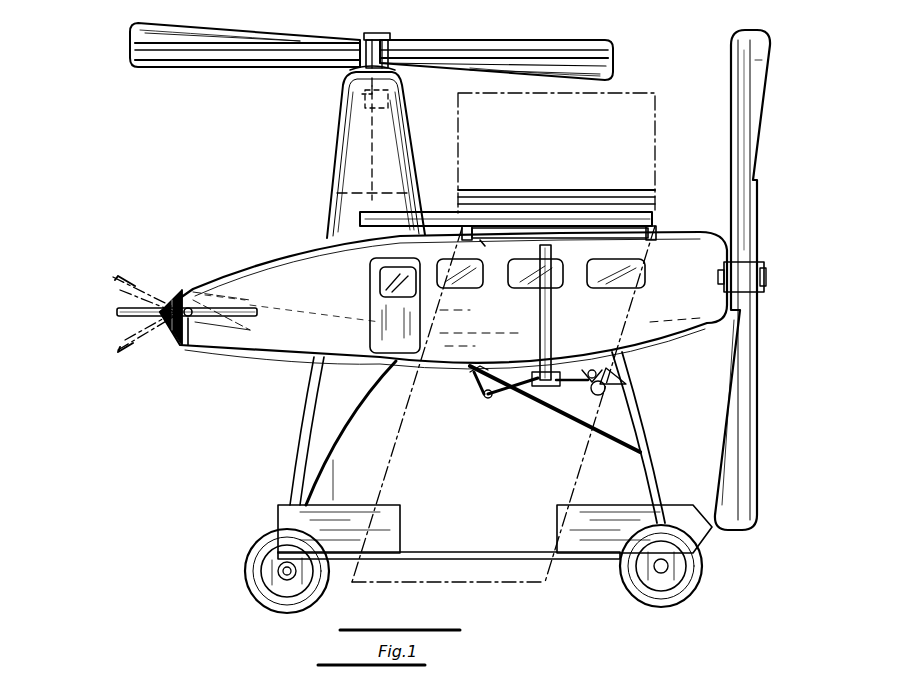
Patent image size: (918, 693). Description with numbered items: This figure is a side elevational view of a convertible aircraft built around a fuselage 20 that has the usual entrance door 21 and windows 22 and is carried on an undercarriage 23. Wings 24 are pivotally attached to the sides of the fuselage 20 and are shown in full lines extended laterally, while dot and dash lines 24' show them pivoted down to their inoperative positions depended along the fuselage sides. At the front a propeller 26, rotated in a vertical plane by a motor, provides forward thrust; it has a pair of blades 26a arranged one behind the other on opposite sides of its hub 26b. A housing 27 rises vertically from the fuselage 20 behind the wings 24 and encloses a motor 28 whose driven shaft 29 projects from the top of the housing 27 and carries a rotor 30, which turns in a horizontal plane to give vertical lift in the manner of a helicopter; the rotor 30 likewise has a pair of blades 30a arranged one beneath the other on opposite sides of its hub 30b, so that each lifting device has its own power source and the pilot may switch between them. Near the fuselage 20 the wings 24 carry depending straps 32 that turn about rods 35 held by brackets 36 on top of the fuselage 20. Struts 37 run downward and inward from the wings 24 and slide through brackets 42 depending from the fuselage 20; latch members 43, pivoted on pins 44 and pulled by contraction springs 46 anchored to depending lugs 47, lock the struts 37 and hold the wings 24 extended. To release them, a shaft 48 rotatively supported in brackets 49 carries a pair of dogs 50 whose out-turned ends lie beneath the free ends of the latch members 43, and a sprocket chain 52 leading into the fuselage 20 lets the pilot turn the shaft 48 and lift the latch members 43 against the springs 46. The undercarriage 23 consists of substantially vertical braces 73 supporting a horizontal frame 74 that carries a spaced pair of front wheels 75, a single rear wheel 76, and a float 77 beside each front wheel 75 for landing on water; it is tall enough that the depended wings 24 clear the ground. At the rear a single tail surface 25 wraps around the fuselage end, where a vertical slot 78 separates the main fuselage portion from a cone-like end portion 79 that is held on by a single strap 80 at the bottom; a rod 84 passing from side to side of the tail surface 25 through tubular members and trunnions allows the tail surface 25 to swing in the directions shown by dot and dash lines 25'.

The fuselage 20 is at (288, 336).
The entrance door 21 is at (369, 318).
The windows 22 is at (515, 286).
The undercarriage 23 is at (292, 470).
The wings 24 is at (556, 156).
The dot and dash lines (inoperative wing positions) 24' is at (503, 417).
The tail surface 25 is at (161, 321).
The dot and dash lines (tail surface movement) 25' is at (141, 313).
The propeller 26 is at (758, 396).
The blades 26a is at (748, 68).
The hub 26b is at (766, 288).
The housing 27 is at (336, 168).
The motor 28 is at (352, 135).
The driven shaft 29 is at (364, 90).
The rotor 30 is at (470, 46).
The blades 30a is at (584, 32).
The hub 30b is at (387, 50).
The depending straps 32 is at (472, 226).
The rods 35 is at (484, 246).
The brackets 36 is at (462, 226).
The struts 37 is at (539, 326).
The brackets 42 is at (556, 372).
The latch members 43 is at (488, 398).
The pins 44 is at (520, 388).
The contraction springs 46 is at (476, 384).
The depending lugs 47 is at (470, 372).
The shaft 48 is at (604, 392).
The brackets 49 is at (592, 368).
The dogs 50 is at (588, 390).
The sprocket chain 52 is at (628, 372).
The braces 73 is at (312, 416).
The horizontal frame 74 is at (478, 551).
The front wheels 75 is at (640, 552).
The rear wheel 76 is at (246, 580).
The float 77 is at (344, 516).
The vertical slot 78 is at (205, 292).
The cone-like end portion 79 is at (178, 298).
The strap 80 is at (188, 348).
The rod 84 is at (188, 306).